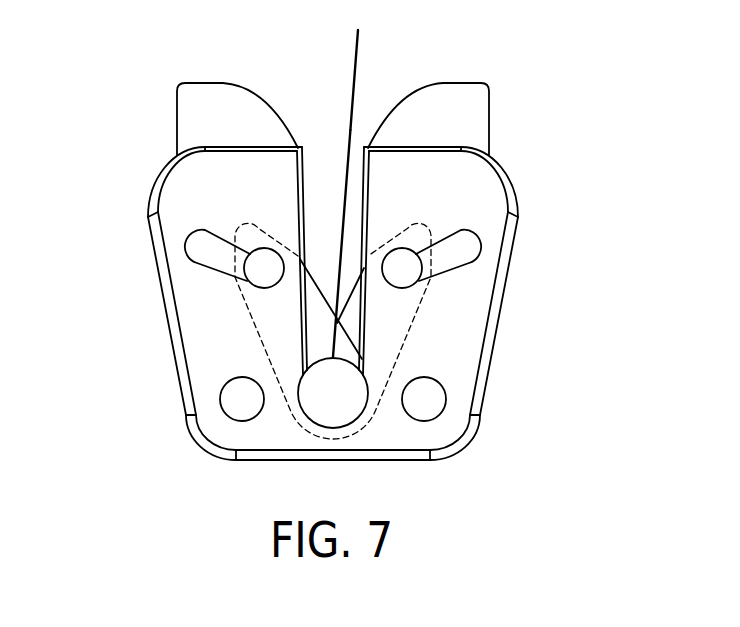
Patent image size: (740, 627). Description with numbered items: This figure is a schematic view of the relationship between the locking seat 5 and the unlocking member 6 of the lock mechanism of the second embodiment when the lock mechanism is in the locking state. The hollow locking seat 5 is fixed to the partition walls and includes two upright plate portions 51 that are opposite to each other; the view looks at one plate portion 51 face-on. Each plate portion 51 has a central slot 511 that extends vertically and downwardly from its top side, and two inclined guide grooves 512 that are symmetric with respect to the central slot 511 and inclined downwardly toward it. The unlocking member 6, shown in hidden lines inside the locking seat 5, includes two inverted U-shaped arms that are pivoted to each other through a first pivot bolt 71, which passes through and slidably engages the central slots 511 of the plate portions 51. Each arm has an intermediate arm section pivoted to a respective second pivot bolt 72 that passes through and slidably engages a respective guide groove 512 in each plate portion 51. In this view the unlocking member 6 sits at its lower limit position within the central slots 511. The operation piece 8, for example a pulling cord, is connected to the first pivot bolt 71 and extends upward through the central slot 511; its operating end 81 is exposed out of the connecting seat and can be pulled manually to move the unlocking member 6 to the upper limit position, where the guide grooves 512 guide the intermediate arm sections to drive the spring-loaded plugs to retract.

The locking seat 5 is at (340, 271).
The plate portion 51 is at (218, 342).
The central slot 511 is at (322, 204).
The inclined guide groove 512 is at (201, 243).
The second pivot bolt 72 is at (260, 278).
The first pivot bolt 71 is at (340, 397).
The unlocking member 6 is at (377, 410).
The operation piece 8 is at (347, 128).
The operating end 81 is at (351, 53).